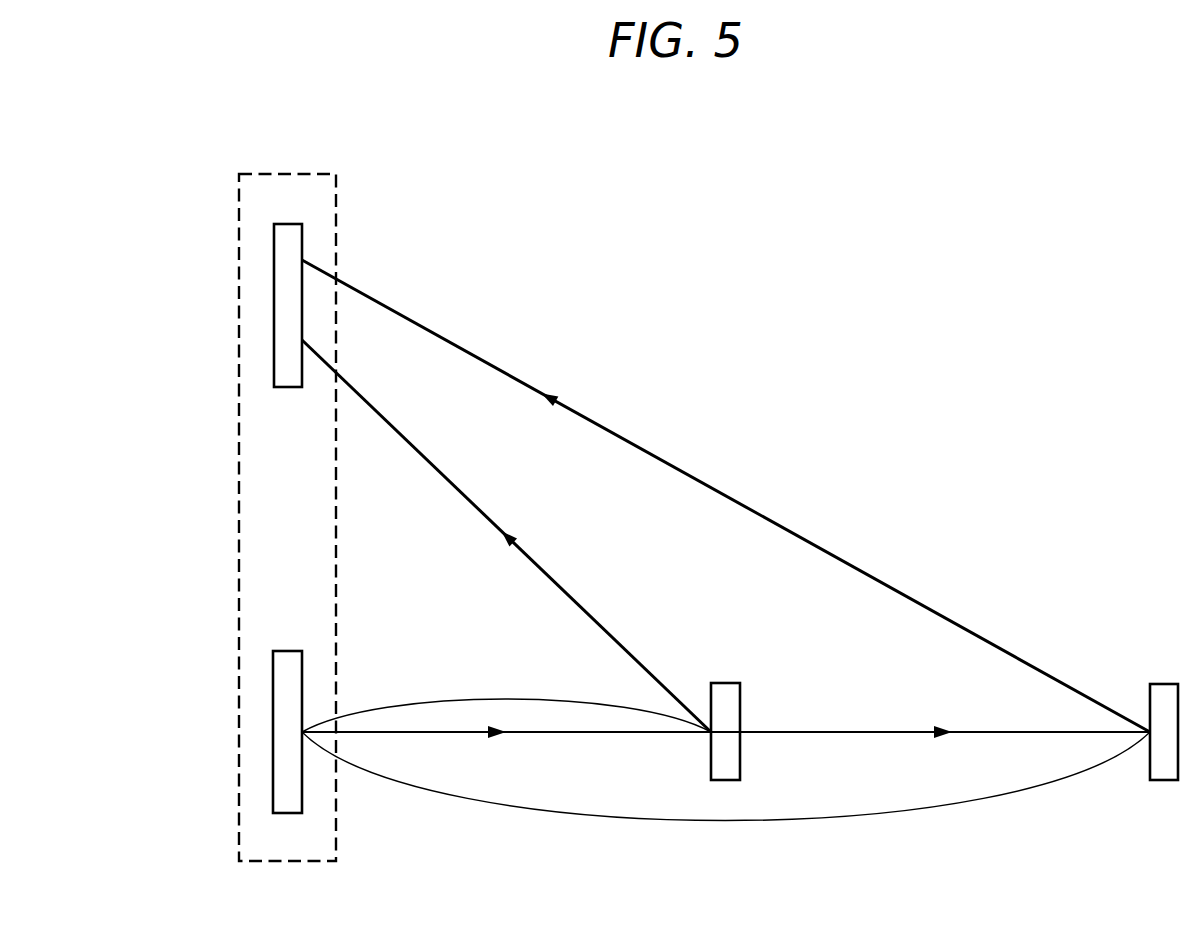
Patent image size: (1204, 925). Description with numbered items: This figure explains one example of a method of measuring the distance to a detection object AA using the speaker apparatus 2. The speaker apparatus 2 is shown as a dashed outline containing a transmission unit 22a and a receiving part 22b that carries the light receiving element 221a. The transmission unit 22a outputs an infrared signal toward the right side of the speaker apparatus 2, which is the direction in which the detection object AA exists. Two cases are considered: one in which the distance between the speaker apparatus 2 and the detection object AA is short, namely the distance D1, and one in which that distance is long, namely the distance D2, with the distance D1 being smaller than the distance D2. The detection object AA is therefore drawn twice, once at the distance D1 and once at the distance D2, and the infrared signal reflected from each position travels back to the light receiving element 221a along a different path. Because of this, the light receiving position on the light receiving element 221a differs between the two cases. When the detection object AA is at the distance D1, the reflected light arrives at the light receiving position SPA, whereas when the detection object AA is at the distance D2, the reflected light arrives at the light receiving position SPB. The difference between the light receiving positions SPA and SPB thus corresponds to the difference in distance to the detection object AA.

The speaker apparatus 2 is at (319, 172).
The second display element (light emitting unit) 22b is at (381, 305).
The light receiving element 221a is at (302, 238).
The transmission unit 22a is at (302, 662).
The light receiving position SPB is at (288, 260).
The light receiving position SPA is at (288, 340).
The distance D1 is at (506, 710).
The distance D2 is at (726, 785).
The detection object AA is at (725, 683).